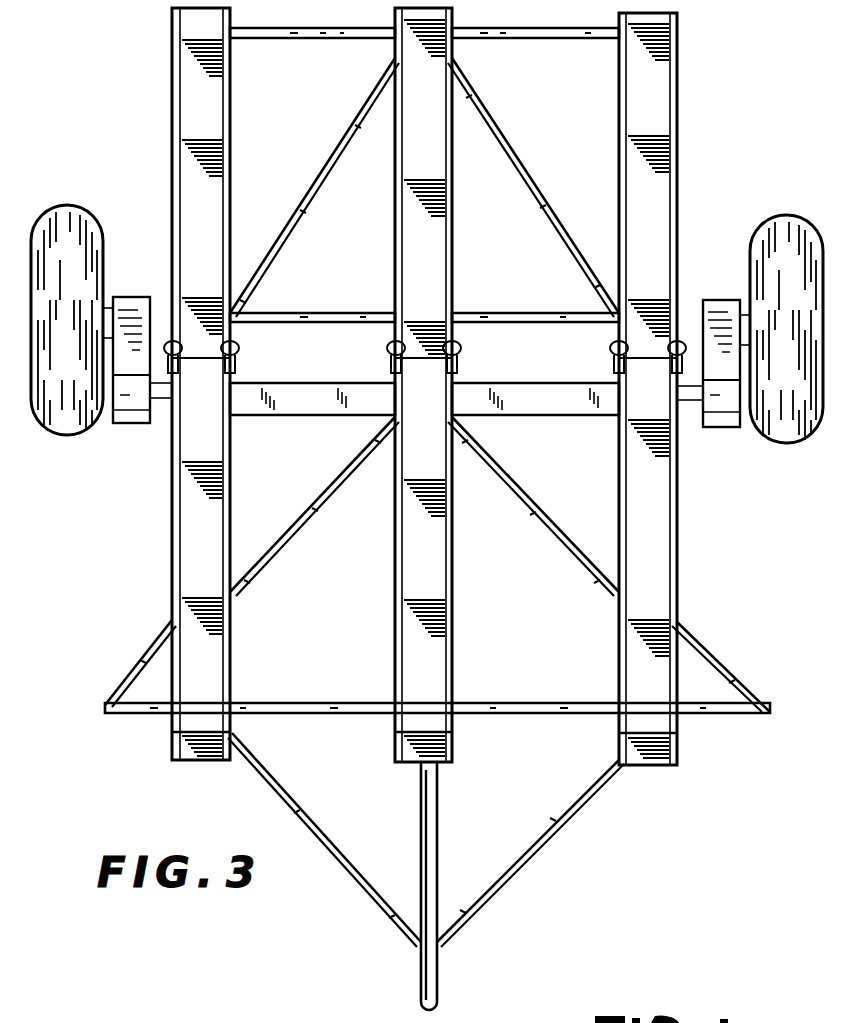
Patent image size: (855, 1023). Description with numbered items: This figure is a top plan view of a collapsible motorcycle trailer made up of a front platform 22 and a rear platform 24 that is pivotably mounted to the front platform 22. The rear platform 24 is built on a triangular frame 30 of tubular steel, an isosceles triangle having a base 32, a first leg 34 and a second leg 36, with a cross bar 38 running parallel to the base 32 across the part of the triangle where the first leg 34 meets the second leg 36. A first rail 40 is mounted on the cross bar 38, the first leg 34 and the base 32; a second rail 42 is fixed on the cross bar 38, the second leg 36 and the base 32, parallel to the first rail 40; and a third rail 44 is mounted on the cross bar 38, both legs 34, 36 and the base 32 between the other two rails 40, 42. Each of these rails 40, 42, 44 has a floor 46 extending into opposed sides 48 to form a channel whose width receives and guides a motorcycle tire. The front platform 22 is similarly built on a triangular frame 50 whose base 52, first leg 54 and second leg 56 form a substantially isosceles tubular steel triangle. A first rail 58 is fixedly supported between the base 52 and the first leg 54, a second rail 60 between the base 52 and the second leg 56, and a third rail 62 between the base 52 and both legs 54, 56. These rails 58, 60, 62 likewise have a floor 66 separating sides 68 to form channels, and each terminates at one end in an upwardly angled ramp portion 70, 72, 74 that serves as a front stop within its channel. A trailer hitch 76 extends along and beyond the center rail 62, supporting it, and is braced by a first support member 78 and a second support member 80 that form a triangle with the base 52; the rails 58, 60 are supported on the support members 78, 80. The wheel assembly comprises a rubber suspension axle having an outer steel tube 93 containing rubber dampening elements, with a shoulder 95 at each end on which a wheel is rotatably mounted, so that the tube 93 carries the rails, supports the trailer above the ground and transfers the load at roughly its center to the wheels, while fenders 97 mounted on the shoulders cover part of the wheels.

The front platform 22 is at (716, 608).
The rear platform 24 is at (706, 150).
The triangular frame 30 is at (519, 138).
The base 32 is at (506, 322).
The first leg 34 is at (344, 148).
The second leg 36 is at (526, 164).
The cross bar 38 is at (328, 40).
The first rail 40 is at (191, 80).
The second rail 42 is at (648, 76).
The third rail 44 is at (420, 62).
The floor 46 is at (217, 245).
The sides 48 is at (172, 258).
The triangular frame 50 is at (563, 508).
The base 52 is at (318, 714).
The first leg 54 is at (316, 502).
The second leg 56 is at (496, 454).
The first rail 58 is at (203, 524).
The second rail 60 is at (648, 606).
The third rail 62 is at (424, 580).
The floor 66 is at (219, 580).
The sides 68 is at (172, 628).
The ramp portion 70 is at (656, 768).
The ramp portion 72 is at (202, 762).
The ramp portion 74 is at (438, 762).
The trailer hitch 76 is at (438, 994).
The first support member 78 is at (496, 877).
The second support member 80 is at (380, 913).
The outer steel tube 93 is at (530, 384).
The shoulder 95 is at (138, 426).
The fenders 97 is at (98, 440).